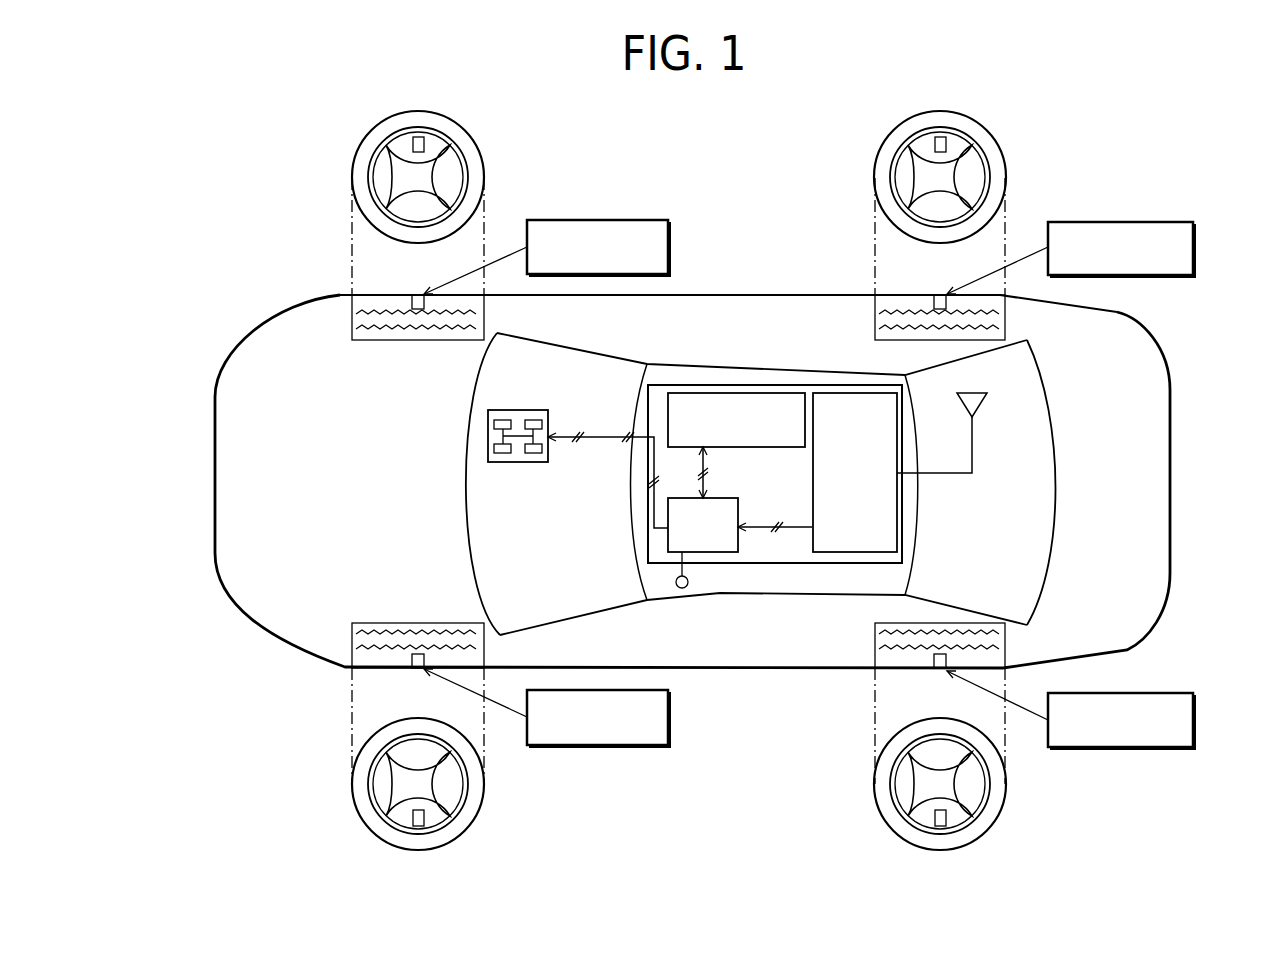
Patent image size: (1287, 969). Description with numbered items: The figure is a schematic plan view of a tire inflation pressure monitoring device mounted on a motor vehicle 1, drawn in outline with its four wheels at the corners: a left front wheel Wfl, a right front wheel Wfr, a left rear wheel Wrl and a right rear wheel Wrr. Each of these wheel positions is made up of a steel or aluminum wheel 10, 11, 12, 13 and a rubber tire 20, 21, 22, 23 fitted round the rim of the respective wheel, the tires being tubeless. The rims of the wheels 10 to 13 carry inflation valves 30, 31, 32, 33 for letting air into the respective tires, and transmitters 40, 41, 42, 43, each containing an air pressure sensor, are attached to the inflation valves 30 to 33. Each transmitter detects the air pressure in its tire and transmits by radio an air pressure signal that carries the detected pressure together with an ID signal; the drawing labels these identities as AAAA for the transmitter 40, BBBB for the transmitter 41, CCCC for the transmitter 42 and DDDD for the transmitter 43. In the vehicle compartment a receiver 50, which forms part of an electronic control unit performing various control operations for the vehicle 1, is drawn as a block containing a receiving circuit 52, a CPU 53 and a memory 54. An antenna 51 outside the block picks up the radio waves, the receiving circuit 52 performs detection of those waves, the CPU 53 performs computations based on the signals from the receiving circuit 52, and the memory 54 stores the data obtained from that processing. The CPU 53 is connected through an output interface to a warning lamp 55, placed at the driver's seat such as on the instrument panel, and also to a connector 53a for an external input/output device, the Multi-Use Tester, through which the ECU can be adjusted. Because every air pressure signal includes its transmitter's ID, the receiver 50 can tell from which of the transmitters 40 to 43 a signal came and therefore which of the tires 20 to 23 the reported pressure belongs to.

The motor vehicle 1 is at (225, 368).
The wheel 10 is at (375, 800).
The wheel 11 is at (375, 165).
The wheel 12 is at (900, 800).
The wheel 13 is at (900, 165).
The tire 20 is at (448, 833).
The tire 21 is at (445, 126).
The tire 22 is at (970, 832).
The tire 23 is at (965, 128).
The inflation valve 30 is at (430, 816).
The inflation valve 31 is at (430, 146).
The inflation valve 32 is at (952, 818).
The inflation valve 33 is at (952, 146).
The transmitter 40 is at (418, 668).
The transmitter 41 is at (418, 295).
The transmitter 42 is at (940, 668).
The transmitter 43 is at (940, 295).
The receiver 50 is at (775, 472).
The antenna 51 is at (948, 476).
The receiving circuit 52 is at (838, 393).
The CPU 53 is at (720, 552).
The connector 53a is at (676, 582).
The memory 54 is at (708, 393).
The warning lamp 55 is at (515, 464).
The right front wheel Wfr is at (345, 318).
The left front wheel Wfl is at (345, 628).
The right rear wheel Wrr is at (1008, 318).
The left rear wheel Wrl is at (1008, 643).